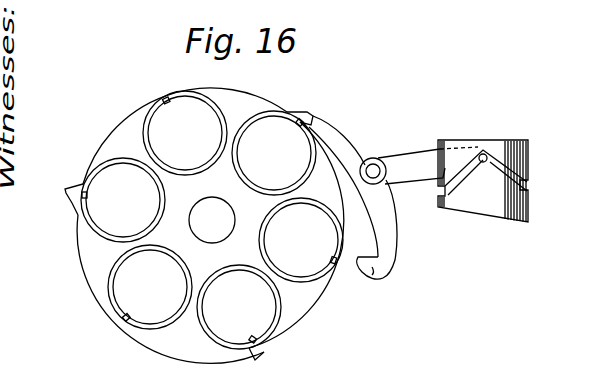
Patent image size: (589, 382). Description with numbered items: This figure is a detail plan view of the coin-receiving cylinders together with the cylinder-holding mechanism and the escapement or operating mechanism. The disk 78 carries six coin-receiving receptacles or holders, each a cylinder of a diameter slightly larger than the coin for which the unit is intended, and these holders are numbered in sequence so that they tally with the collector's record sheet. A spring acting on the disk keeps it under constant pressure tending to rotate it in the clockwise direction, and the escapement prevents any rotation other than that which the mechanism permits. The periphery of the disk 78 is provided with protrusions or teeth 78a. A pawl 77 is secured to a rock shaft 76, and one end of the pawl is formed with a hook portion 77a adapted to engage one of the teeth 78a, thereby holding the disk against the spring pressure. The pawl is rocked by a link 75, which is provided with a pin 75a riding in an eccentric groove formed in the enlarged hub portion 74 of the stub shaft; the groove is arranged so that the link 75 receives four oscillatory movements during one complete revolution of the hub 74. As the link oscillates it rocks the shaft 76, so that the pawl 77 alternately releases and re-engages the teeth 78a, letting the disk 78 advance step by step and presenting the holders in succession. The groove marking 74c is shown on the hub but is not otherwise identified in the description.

The disk 78 is at (248, 106).
The teeth 78a is at (306, 110).
The pawl 77 is at (390, 233).
The hook portion 77a is at (368, 277).
The shaft 76 is at (373, 165).
The link 75 is at (404, 156).
The pin 75a is at (484, 149).
The hub portion 74 is at (486, 203).
The cam groove 74c is at (492, 164).